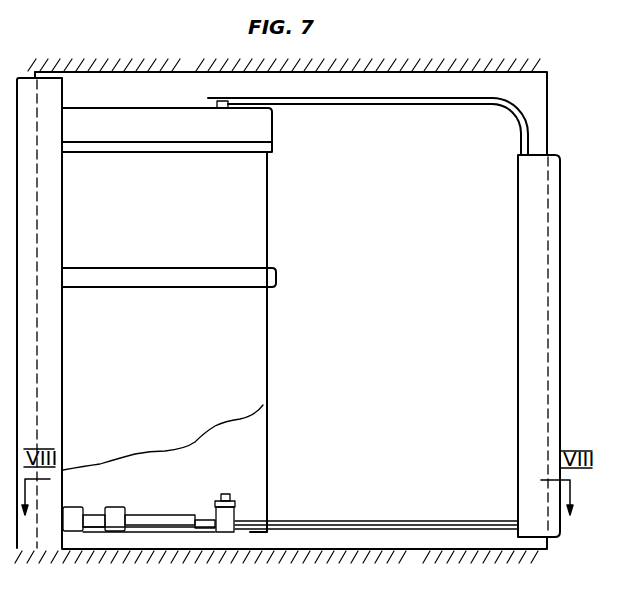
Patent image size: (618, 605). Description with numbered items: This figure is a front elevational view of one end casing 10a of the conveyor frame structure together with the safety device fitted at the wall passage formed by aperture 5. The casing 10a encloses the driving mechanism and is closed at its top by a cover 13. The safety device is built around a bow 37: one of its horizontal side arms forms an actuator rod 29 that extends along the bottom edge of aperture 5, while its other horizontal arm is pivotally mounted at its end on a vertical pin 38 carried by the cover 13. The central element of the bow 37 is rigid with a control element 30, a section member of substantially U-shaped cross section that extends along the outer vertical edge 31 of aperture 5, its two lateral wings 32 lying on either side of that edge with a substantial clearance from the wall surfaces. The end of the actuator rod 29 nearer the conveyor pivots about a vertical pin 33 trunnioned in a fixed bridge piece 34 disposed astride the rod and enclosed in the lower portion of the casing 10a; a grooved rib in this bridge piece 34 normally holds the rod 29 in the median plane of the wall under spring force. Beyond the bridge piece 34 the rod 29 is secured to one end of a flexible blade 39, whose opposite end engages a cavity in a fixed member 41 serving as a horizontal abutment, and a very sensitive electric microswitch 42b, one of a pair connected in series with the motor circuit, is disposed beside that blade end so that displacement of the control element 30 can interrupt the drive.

The aperture 5 is at (433, 550).
The casing 10a is at (232, 232).
The cover 13 is at (266, 130).
The actuator rod 29 is at (395, 521).
The control element 30 is at (518, 262).
The outer vertical edge 31 is at (545, 100).
The lateral wings 32 is at (548, 340).
The vertical pin 33 is at (227, 494).
The bridge piece 34 is at (236, 510).
The bow 37 is at (520, 132).
The vertical pin 38 is at (214, 103).
The flexible blade 39 is at (165, 515).
The fixed member 41 is at (78, 507).
The electric microswitch 42b is at (115, 507).